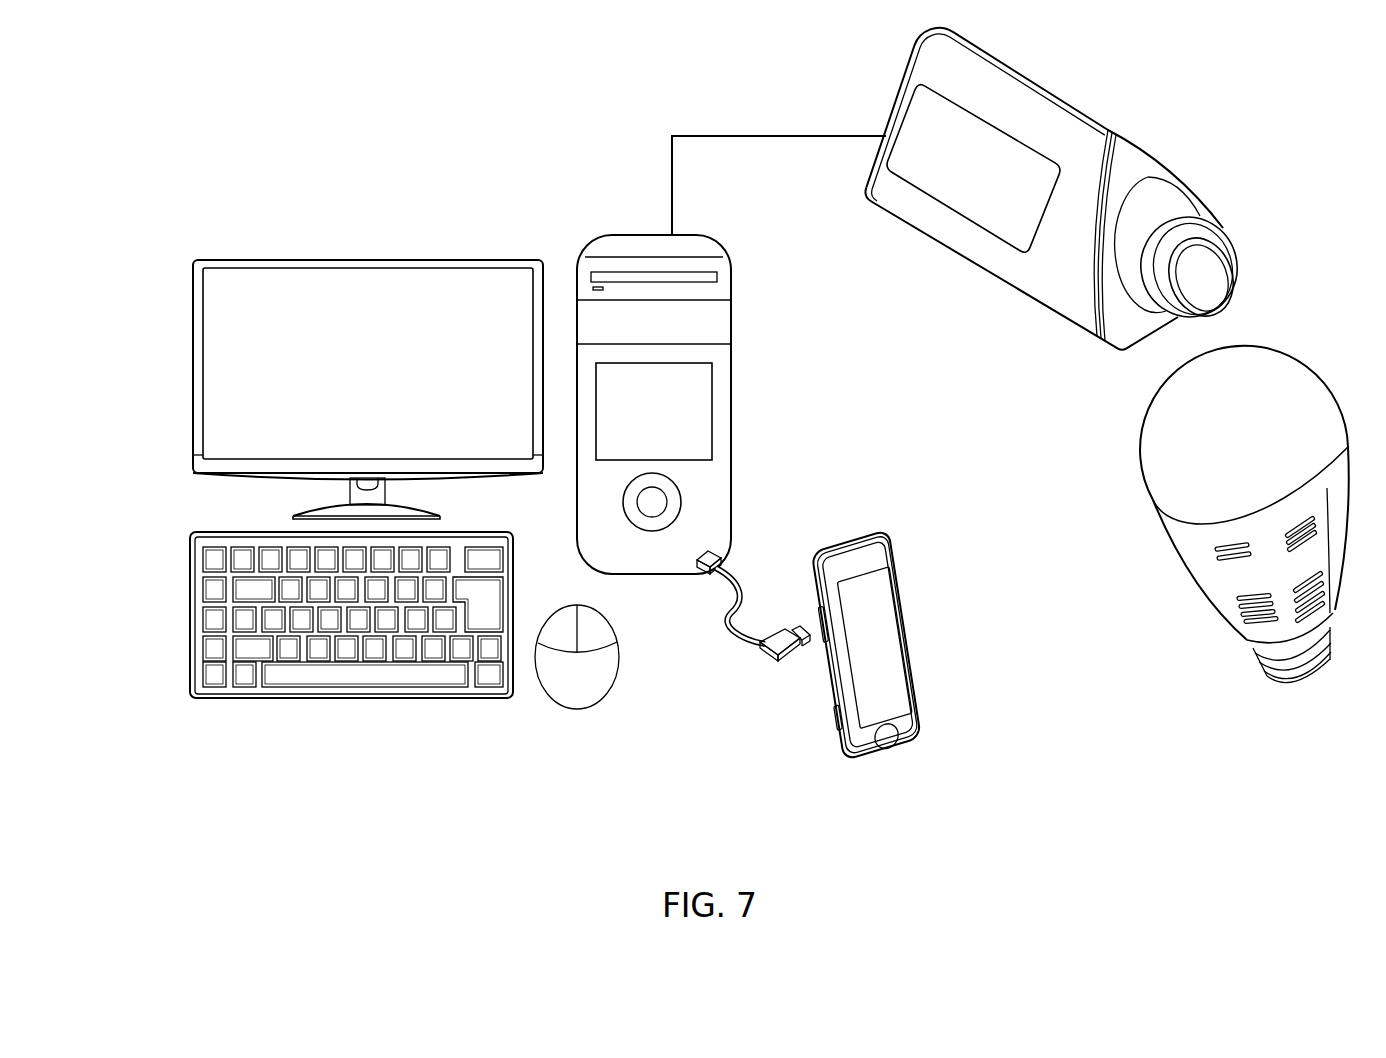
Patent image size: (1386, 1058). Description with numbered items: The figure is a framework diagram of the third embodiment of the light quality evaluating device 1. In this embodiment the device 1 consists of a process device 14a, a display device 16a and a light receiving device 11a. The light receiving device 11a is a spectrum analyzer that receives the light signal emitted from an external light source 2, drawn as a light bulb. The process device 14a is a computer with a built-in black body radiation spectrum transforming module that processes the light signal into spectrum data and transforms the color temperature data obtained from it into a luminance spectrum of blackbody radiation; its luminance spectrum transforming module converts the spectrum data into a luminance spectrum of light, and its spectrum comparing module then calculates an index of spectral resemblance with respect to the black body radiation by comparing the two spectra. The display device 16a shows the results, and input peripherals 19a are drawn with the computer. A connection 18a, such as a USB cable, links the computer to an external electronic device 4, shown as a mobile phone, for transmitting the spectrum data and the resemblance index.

The light quality evaluating device 1 is at (168, 152).
The external light source 2 is at (1180, 552).
The external electronic device 4 is at (737, 590).
The light receiving device 11a is at (993, 229).
The process device 14a is at (720, 317).
The display device 16a is at (221, 313).
The cable 18a is at (703, 556).
The keyboard and mouse 19a is at (557, 702).